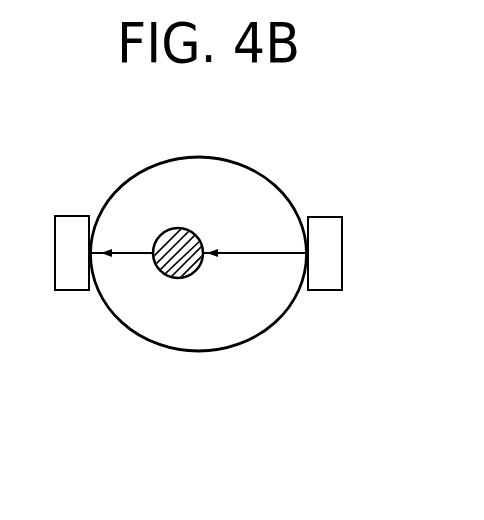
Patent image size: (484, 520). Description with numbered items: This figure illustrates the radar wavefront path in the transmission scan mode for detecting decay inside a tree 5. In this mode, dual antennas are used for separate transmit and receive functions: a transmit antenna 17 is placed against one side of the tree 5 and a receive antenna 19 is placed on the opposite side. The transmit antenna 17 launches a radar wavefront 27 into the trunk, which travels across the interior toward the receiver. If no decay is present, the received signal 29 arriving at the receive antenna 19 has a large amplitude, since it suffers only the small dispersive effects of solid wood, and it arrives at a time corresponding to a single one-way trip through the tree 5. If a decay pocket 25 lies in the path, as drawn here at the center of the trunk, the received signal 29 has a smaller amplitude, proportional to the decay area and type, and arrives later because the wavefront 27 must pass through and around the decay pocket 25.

The tree 5 is at (233, 158).
The transmit antenna 17 is at (323, 290).
The receive antenna 19 is at (73, 227).
The decay pocket 25 is at (198, 229).
The radar wavefront 27 is at (247, 255).
The received signal 29 is at (128, 255).